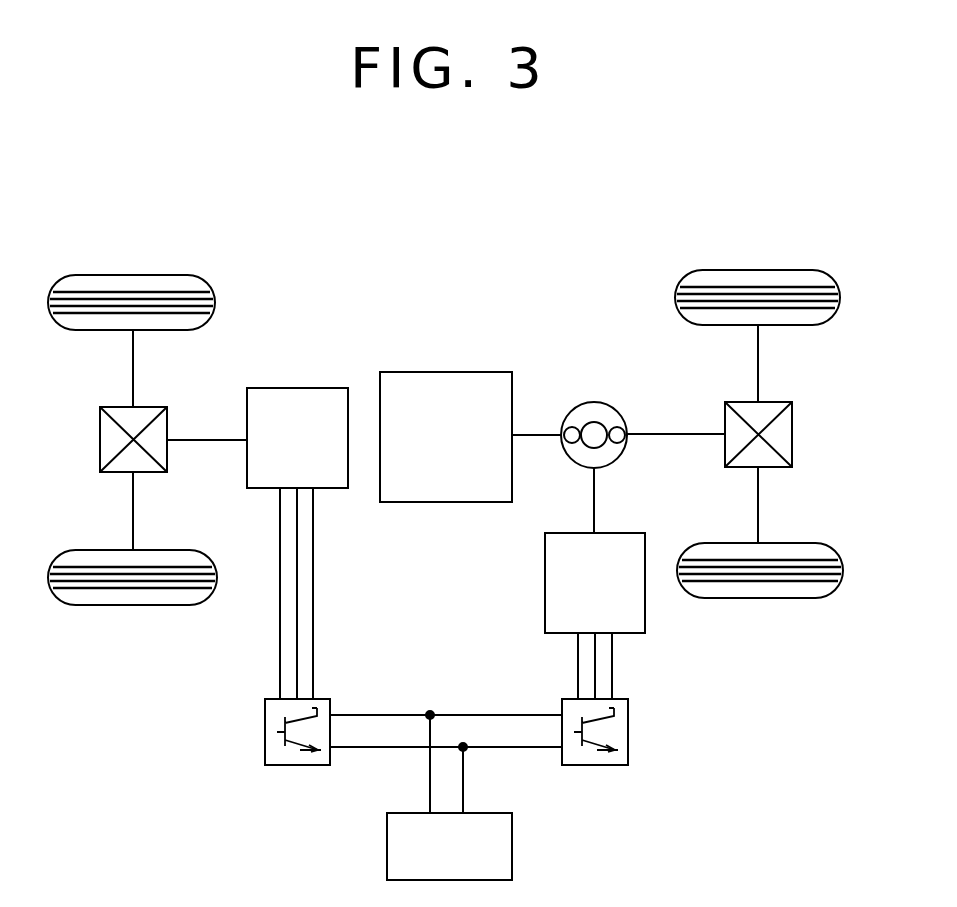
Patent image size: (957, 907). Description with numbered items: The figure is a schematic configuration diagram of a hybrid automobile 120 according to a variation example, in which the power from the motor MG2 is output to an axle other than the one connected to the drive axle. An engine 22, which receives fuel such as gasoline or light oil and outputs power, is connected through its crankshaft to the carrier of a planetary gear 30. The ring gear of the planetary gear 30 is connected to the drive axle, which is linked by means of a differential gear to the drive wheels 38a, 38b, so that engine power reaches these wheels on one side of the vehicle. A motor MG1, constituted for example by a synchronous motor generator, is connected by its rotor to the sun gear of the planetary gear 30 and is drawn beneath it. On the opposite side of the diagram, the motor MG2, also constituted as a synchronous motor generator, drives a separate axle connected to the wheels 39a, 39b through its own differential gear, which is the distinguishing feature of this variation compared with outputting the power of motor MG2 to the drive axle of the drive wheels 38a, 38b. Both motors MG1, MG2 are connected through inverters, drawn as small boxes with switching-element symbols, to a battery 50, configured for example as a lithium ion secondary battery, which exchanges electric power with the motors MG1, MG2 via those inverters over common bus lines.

The hybrid automobile 120 is at (544, 226).
The engine 22 is at (447, 372).
The planetary gear 30 is at (590, 402).
The motor MG1 is at (545, 584).
The motor MG2 is at (297, 388).
The drive wheel 38a is at (758, 270).
The drive wheel 38b is at (758, 600).
The wheel 39a is at (133, 275).
The wheel 39b is at (133, 606).
The battery 50 is at (512, 843).